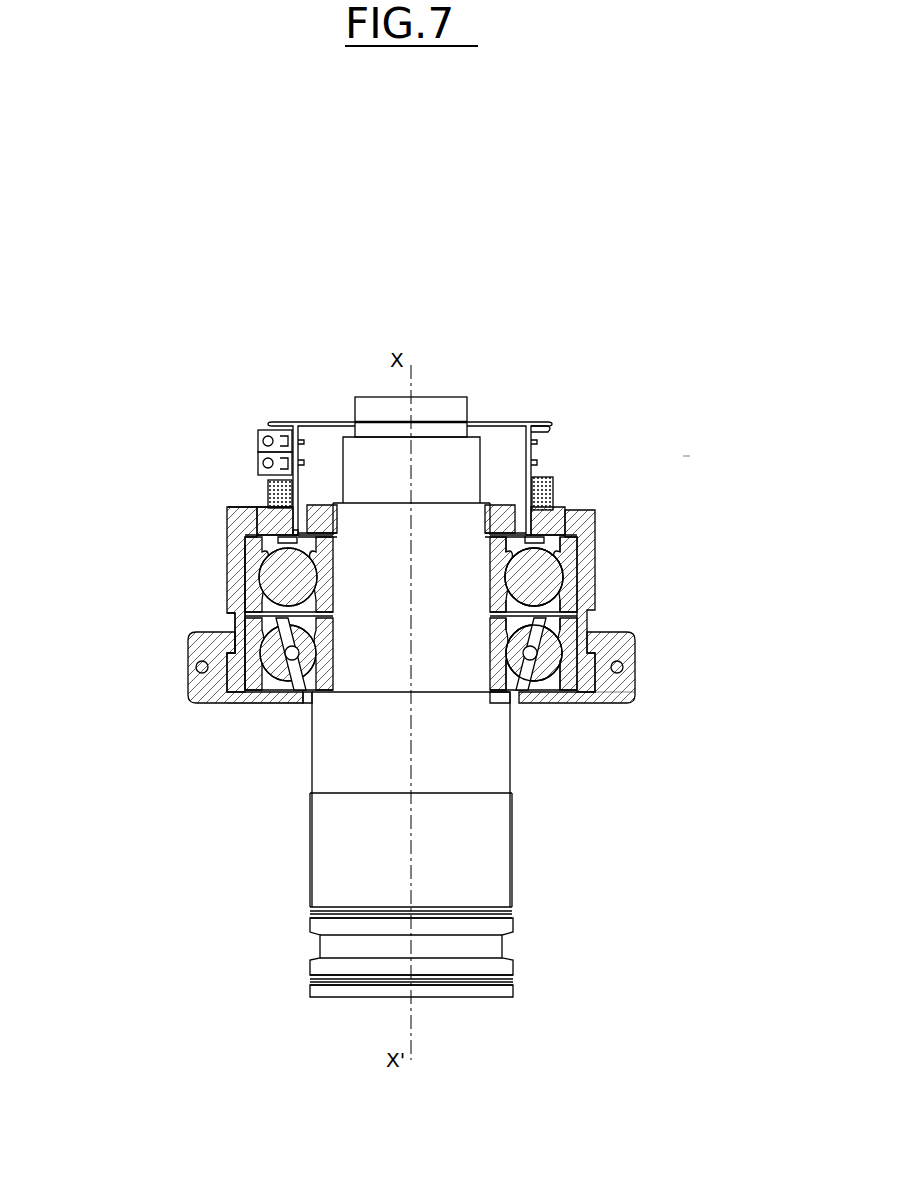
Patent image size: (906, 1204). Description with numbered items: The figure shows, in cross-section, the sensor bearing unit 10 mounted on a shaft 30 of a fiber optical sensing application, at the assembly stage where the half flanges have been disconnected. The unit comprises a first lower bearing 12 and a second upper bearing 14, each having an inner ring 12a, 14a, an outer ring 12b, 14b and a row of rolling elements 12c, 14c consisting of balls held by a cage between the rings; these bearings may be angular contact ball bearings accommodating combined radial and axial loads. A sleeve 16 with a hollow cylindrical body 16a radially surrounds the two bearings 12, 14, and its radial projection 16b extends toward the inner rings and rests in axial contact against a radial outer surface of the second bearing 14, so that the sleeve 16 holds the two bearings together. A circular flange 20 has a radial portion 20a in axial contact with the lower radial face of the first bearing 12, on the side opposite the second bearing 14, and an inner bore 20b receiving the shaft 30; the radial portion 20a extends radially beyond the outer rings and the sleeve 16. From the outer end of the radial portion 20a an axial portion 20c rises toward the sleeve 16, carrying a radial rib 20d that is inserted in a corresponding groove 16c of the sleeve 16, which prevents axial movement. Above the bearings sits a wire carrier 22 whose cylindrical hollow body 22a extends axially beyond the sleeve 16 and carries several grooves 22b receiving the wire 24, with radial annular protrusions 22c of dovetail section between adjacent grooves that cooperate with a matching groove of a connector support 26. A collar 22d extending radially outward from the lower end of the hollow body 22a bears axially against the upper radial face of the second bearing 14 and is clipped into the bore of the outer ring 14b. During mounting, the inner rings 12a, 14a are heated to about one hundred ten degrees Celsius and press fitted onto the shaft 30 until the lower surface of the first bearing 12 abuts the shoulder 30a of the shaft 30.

The sensor bearing unit 10 is at (686, 455).
The first lower bearing 12 is at (588, 663).
The inner ring 12a is at (498, 640).
The outer ring 12b is at (549, 641).
The rolling elements 12c is at (546, 660).
The second upper bearing 14 is at (577, 592).
The inner ring 14a is at (505, 553).
The outer ring 14b is at (587, 570).
The rolling elements 14c is at (536, 568).
The sleeve 16 is at (229, 592).
The hollow cylindrical body 16a is at (245, 580).
The radial projection 16b is at (250, 521).
The groove 16c is at (244, 613).
The circular flange 20 is at (643, 668).
The radial portion 20a is at (598, 703).
The inner bore 20b is at (300, 700).
The axial portion 20c is at (205, 654).
The radial rib 20d is at (235, 633).
The wire carrier 22 is at (561, 410).
The cylindrical hollow body 22a is at (267, 477).
The grooves 22b is at (550, 428).
The radial annular protrusions 22c is at (540, 442).
The collar 22d is at (257, 537).
The wire 24 is at (554, 487).
The connector support 26 is at (258, 441).
The shaft 30 is at (507, 871).
The shoulder 30a is at (508, 696).